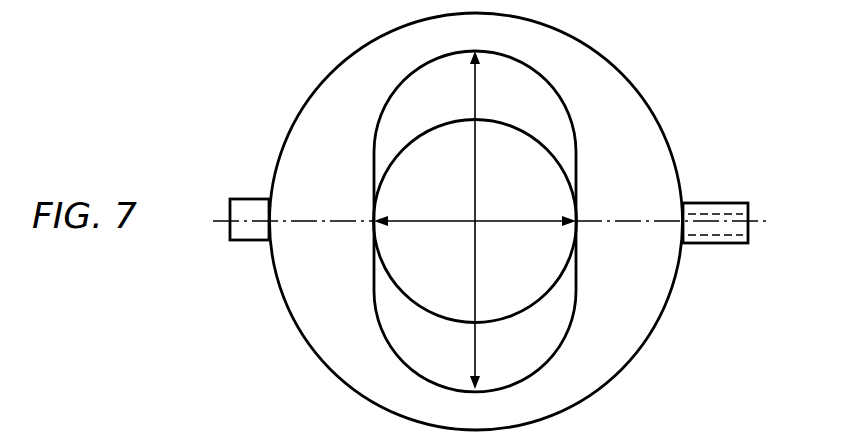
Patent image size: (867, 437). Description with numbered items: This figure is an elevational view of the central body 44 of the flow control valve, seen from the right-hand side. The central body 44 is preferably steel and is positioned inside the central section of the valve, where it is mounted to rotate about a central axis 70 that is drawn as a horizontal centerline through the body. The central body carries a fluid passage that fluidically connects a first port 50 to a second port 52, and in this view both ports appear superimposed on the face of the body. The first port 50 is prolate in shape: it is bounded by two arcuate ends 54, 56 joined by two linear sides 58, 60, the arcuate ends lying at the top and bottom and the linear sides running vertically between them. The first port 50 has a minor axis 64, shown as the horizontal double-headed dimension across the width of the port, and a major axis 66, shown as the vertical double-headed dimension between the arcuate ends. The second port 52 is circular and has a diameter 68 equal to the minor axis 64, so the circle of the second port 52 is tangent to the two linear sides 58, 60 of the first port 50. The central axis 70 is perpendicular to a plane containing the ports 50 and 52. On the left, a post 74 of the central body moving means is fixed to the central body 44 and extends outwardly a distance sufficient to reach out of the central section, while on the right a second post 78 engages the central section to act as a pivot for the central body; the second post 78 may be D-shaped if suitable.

The central body 44 is at (620, 70).
The first port 50 is at (443, 58).
The second port 52 is at (402, 157).
The arcuate end 54 is at (533, 63).
The arcuate end 56 is at (507, 391).
The linear side 58 is at (578, 152).
The linear side 60 is at (373, 160).
The minor axis 64 is at (475, 249).
The diameter 68 is at (533, 223).
The major axis 66 is at (477, 173).
The central axis 70 is at (340, 222).
The post 74 is at (250, 210).
The second post 78 is at (700, 245).